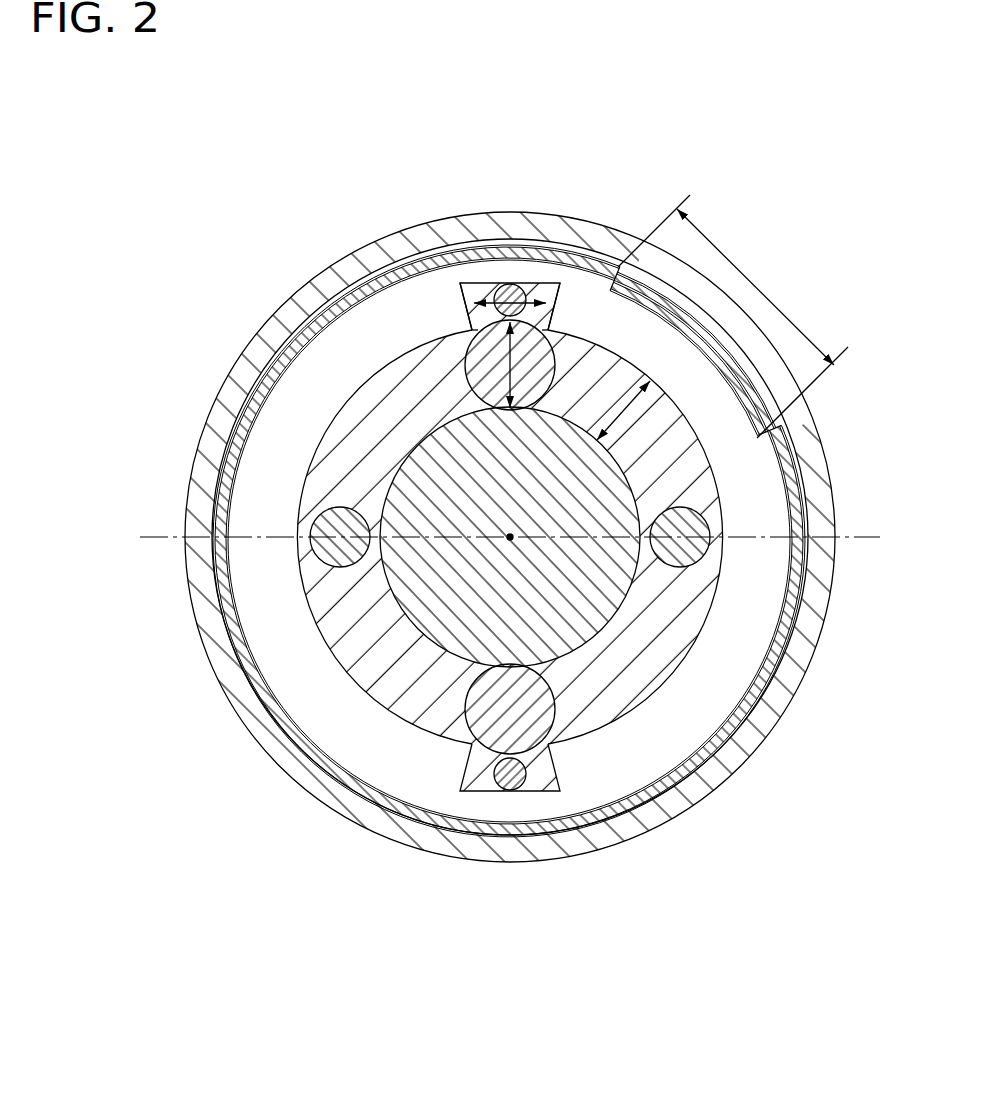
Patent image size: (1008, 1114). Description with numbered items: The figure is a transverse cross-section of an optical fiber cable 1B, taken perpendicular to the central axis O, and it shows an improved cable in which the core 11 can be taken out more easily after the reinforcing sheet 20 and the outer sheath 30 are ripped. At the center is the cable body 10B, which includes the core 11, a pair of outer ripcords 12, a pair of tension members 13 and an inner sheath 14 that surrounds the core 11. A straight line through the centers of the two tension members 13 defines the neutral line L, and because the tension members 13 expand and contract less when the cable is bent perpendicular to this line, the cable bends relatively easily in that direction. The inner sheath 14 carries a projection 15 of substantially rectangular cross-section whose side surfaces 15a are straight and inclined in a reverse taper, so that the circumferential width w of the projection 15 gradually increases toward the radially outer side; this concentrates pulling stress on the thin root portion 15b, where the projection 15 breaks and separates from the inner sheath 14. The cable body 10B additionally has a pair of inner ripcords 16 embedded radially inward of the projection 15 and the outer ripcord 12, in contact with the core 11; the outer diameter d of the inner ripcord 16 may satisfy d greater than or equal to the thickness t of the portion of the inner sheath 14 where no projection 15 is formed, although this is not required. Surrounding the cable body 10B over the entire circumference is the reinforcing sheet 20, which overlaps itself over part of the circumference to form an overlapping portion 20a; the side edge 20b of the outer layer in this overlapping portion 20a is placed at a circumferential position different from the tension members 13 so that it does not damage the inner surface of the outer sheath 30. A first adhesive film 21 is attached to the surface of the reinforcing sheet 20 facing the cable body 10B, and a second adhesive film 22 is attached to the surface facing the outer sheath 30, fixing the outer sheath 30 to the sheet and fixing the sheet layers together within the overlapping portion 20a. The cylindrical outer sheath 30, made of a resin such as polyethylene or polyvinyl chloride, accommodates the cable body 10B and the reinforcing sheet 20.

The optical fiber cable 1B is at (170, 280).
The cable body 10B is at (367, 712).
The core 11 is at (480, 642).
The outer ripcord 12 is at (504, 286).
The tension member 13 is at (337, 545).
The inner sheath 14 is at (357, 637).
The projection 15 is at (472, 283).
The side surface 15a is at (466, 297).
The root portion 15b is at (470, 329).
The inner ripcord 16 is at (487, 367).
The reinforcing sheet 20 is at (561, 254).
The overlapping portion 20a is at (733, 316).
The side edge 20b is at (621, 262).
The first adhesive film 21 is at (578, 275).
The second adhesive film 22 is at (597, 267).
The outer sheath 30 is at (372, 257).
The neutral line L is at (852, 532).
The central axis O is at (512, 542).
The outer diameter of inner ripcord d is at (520, 365).
The width of projection w is at (541, 294).
The thickness of inner sheath t is at (623, 410).